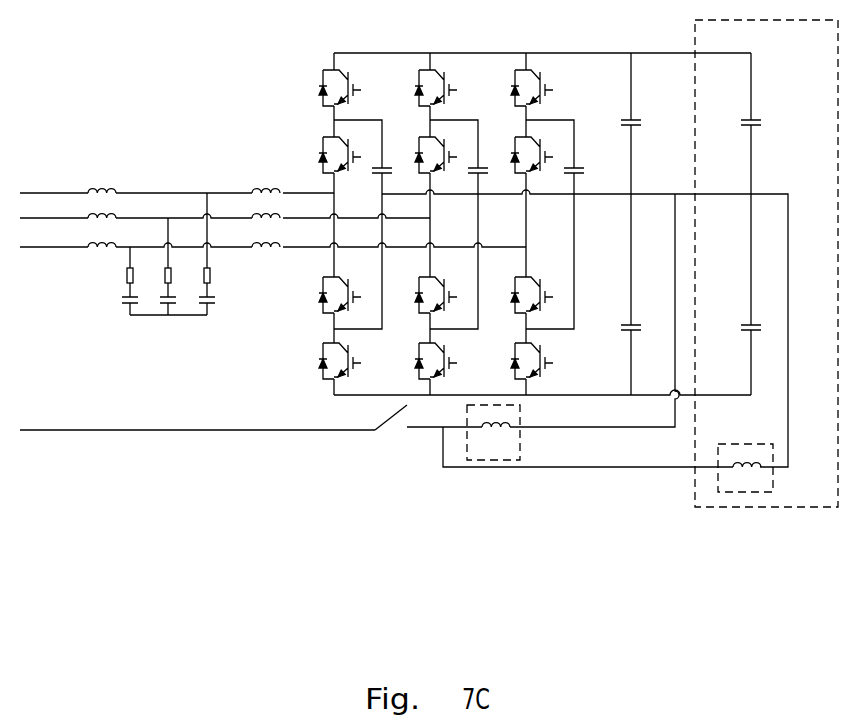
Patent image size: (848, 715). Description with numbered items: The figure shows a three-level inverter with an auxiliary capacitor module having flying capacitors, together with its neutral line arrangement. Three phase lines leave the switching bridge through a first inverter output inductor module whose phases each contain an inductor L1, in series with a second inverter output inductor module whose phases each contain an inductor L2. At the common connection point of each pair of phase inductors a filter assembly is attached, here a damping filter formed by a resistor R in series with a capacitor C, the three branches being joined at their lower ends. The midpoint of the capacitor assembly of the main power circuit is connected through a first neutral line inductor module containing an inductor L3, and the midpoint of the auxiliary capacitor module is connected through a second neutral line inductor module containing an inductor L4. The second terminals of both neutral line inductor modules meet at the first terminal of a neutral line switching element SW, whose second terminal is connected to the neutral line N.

The inductor L1 is at (266, 202).
The inductor L2 is at (102, 202).
The inductor L3 is at (493, 432).
The inductor L4 is at (745, 468).
The resistor R is at (154, 273).
The capacitor C is at (157, 303).
The neutral line N is at (197, 415).
The neutral line switching element SW is at (391, 437).